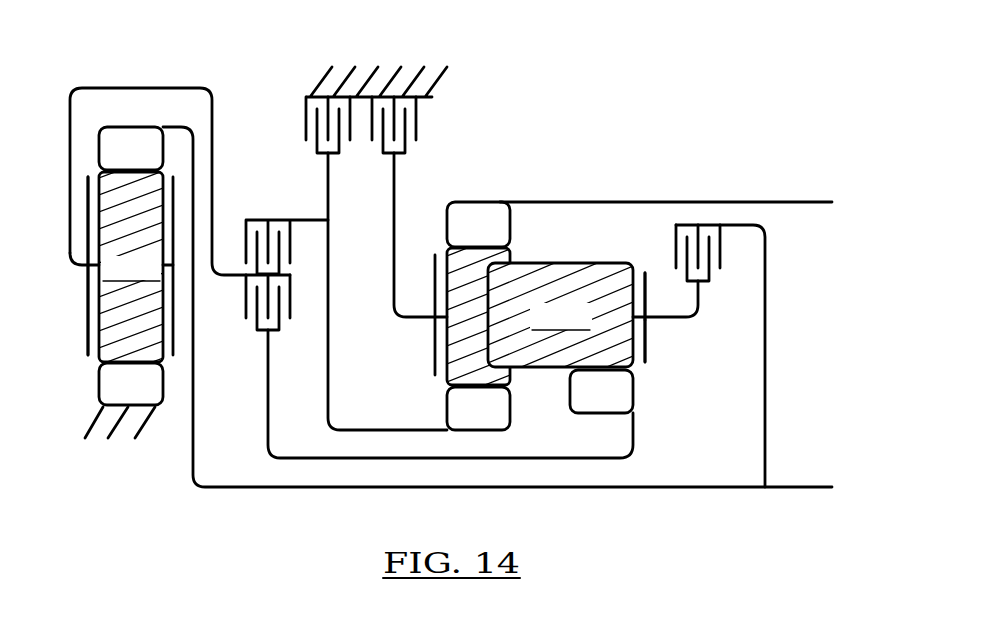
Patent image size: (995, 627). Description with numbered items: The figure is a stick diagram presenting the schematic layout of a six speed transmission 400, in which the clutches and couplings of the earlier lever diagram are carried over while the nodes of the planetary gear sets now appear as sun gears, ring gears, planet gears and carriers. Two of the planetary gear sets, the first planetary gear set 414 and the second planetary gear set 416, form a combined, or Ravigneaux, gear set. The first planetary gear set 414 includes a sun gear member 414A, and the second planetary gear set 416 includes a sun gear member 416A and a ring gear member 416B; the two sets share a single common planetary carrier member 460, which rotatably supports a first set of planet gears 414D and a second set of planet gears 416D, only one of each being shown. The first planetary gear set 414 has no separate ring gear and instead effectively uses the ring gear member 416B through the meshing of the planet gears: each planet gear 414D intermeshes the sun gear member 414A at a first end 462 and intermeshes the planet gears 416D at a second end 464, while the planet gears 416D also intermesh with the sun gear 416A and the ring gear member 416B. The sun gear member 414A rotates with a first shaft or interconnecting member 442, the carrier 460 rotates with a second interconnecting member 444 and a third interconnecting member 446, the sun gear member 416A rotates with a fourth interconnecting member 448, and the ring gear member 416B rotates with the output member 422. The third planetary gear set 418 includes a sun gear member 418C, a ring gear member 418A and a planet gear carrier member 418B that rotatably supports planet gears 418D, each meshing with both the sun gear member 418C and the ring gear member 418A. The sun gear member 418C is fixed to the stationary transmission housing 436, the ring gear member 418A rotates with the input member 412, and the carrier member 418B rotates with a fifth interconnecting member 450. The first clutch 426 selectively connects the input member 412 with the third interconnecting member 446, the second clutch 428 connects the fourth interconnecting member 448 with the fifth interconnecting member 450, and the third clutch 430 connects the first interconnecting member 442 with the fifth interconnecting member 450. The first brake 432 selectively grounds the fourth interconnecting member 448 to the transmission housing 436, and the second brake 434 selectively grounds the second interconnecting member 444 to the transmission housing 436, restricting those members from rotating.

The six speed transmission 400 is at (758, 133).
The input member 412 is at (808, 489).
The first planetary gear set 414 is at (593, 430).
The sun gear member 414A is at (605, 397).
The first set of planet gears 414D is at (560, 314).
The second planetary gear set 416 is at (453, 428).
The sun gear member 416A is at (480, 413).
The ring gear member 416B is at (482, 215).
The second set of planet gears 416D is at (497, 300).
The third planetary gear set 418 is at (122, 437).
The ring gear member 418A is at (137, 140).
The planet gear carrier member 418B is at (88, 312).
The sun gear member 418C is at (132, 393).
The planet gears 418D is at (131, 268).
The output member 422 is at (808, 205).
The first clutch 426 is at (673, 240).
The second clutch 428 is at (246, 238).
The third clutch 430 is at (292, 307).
The first brake 432 is at (305, 122).
The second brake 434 is at (418, 122).
The transmission housing 436 is at (95, 420).
The first shaft or interconnecting member 442 is at (377, 458).
The second shaft or interconnecting member 444 is at (392, 250).
The third shaft or interconnecting member 446 is at (702, 290).
The fourth shaft or interconnecting member 448 is at (330, 367).
The fifth shaft or interconnecting member 450 is at (92, 87).
The planetary carrier member 460 is at (647, 350).
The first end 462 is at (650, 325).
The second end 464 is at (522, 345).